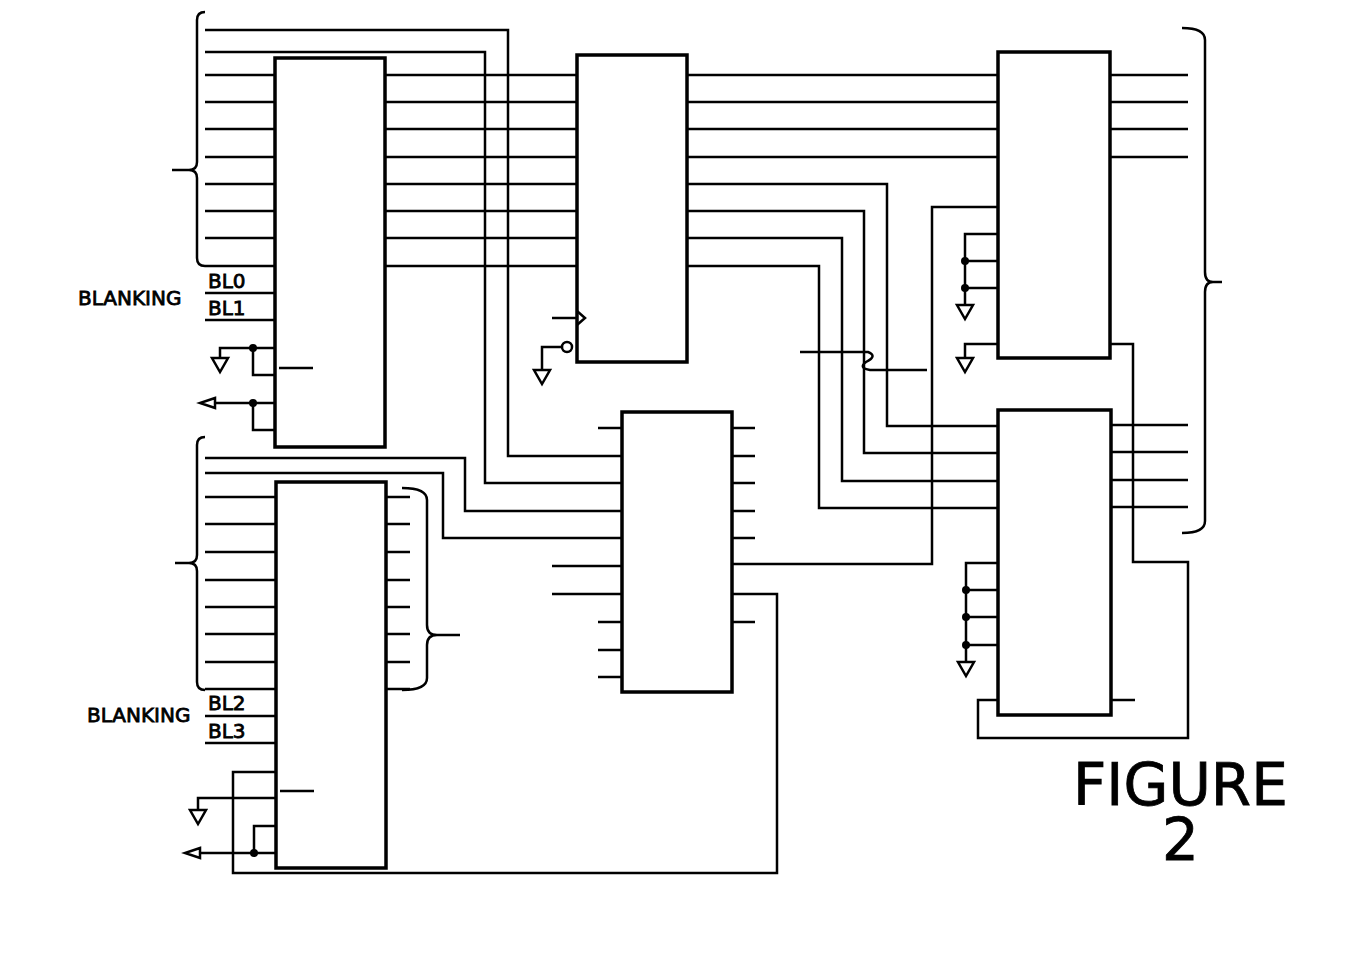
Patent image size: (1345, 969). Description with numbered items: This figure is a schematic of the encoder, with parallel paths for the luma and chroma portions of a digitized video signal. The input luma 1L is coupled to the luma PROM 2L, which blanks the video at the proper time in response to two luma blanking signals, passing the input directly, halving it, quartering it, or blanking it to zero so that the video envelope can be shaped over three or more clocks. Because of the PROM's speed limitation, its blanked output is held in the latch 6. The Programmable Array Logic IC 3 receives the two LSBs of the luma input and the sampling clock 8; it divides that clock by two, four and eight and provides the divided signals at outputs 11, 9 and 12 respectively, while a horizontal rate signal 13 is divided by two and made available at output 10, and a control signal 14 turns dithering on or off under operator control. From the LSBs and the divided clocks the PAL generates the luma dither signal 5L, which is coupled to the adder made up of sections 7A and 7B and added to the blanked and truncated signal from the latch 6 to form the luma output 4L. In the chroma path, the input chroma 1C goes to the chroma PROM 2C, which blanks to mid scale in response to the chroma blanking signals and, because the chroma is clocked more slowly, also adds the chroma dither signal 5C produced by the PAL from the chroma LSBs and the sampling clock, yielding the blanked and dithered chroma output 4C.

The input luma 1L is at (142, 235).
The input chroma 1C is at (142, 640).
The luma PROM 2L is at (389, 337).
The chroma PROM 2C is at (390, 777).
The Programmable Array Logic IC 3 is at (672, 695).
The luma output 4L is at (1164, 155).
The chroma output 4C is at (485, 700).
The luma dither signal 5L is at (890, 572).
The chroma dither signal 5C is at (779, 764).
The latch 6 is at (645, 55).
The adder section 7A is at (1111, 273).
The adder section 7B is at (1114, 612).
The sampling clock 8 is at (552, 318).
The divided-by-four clock output 9 is at (755, 511).
The divided horizontal rate output 10 is at (755, 483).
The divided-by-two clock output 11 is at (755, 456).
The divided-by-eight clock output 12 is at (755, 428).
The horizontal rate signal 13 is at (548, 560).
The control signal 14 is at (548, 588).